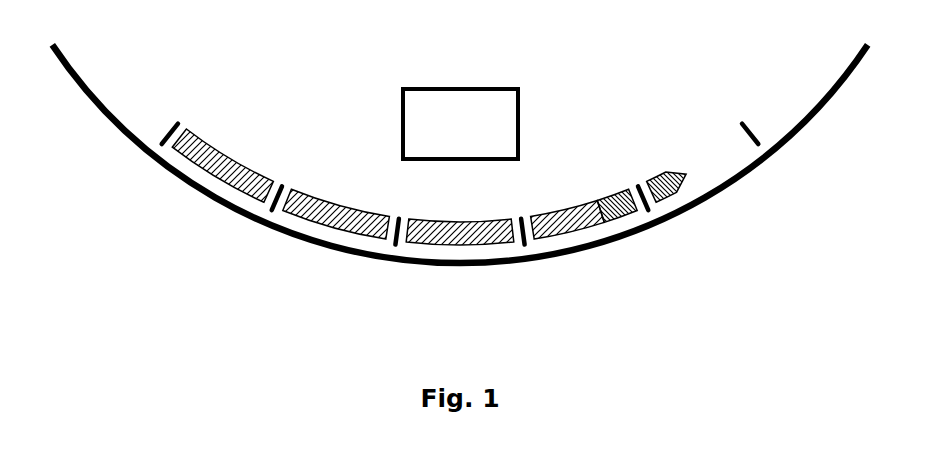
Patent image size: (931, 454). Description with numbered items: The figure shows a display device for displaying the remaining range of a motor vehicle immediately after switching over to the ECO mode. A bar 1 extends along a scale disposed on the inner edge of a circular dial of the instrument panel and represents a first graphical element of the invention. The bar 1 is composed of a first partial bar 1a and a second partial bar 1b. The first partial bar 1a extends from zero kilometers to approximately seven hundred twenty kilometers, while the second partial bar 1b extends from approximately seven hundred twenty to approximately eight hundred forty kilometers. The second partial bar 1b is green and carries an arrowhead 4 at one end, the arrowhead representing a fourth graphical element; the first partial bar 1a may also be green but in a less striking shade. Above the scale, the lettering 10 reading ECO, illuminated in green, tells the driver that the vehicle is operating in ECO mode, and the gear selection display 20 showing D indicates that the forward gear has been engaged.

The bar 1 is at (212, 162).
The first partial bar 1a is at (573, 225).
The second partial bar 1b is at (625, 220).
The arrowhead 4 is at (682, 182).
The lettering 10 is at (603, 67).
The gear selection display 20 is at (403, 87).